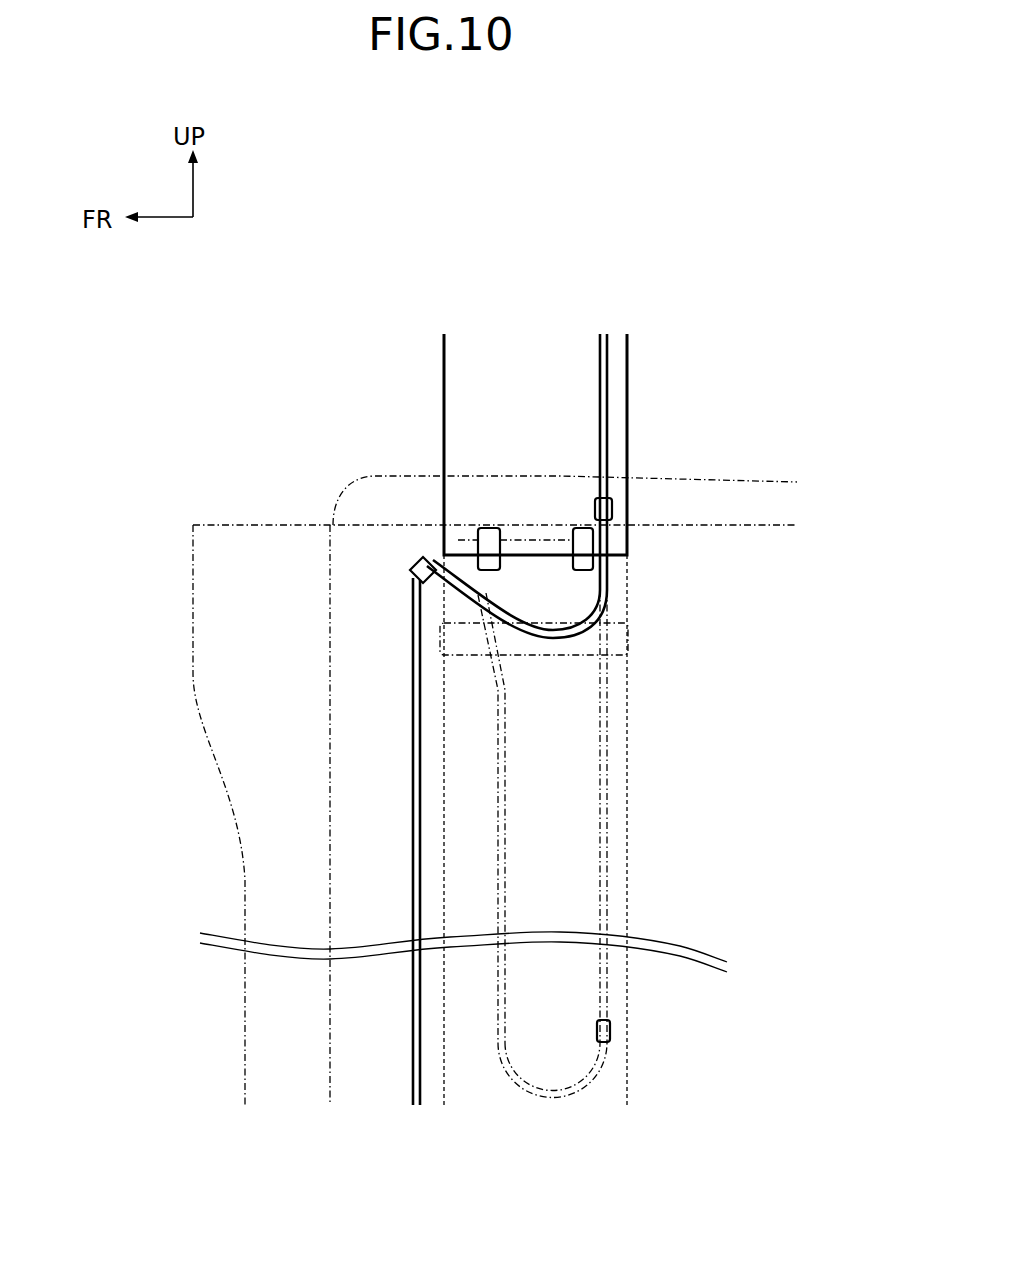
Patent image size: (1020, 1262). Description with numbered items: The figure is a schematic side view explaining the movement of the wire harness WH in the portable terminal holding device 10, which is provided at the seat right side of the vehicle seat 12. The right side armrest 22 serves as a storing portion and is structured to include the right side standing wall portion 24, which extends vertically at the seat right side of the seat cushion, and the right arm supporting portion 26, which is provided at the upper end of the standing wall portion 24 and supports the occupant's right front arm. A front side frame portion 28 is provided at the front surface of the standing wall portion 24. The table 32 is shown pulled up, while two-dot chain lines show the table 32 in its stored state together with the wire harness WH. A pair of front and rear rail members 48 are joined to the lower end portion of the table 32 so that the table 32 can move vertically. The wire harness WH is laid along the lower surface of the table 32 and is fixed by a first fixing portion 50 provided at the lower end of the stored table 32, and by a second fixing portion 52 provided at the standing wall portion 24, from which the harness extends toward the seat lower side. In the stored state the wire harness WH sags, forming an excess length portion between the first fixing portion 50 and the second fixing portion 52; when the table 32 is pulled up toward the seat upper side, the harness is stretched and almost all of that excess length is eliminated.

The portable terminal holding device 10 is at (368, 412).
The vehicle seat 12 is at (275, 300).
The right side armrest 22 is at (233, 518).
The right side standing wall portion 24 is at (328, 561).
The right arm supporting portion 26 is at (708, 478).
The front side frame portion 28 is at (192, 613).
The table 32 is at (444, 371).
The rail members 48 is at (573, 535).
The first fixing portion 50 is at (613, 508).
The second fixing portion 52 is at (415, 560).
The wire harness WH is at (608, 396).